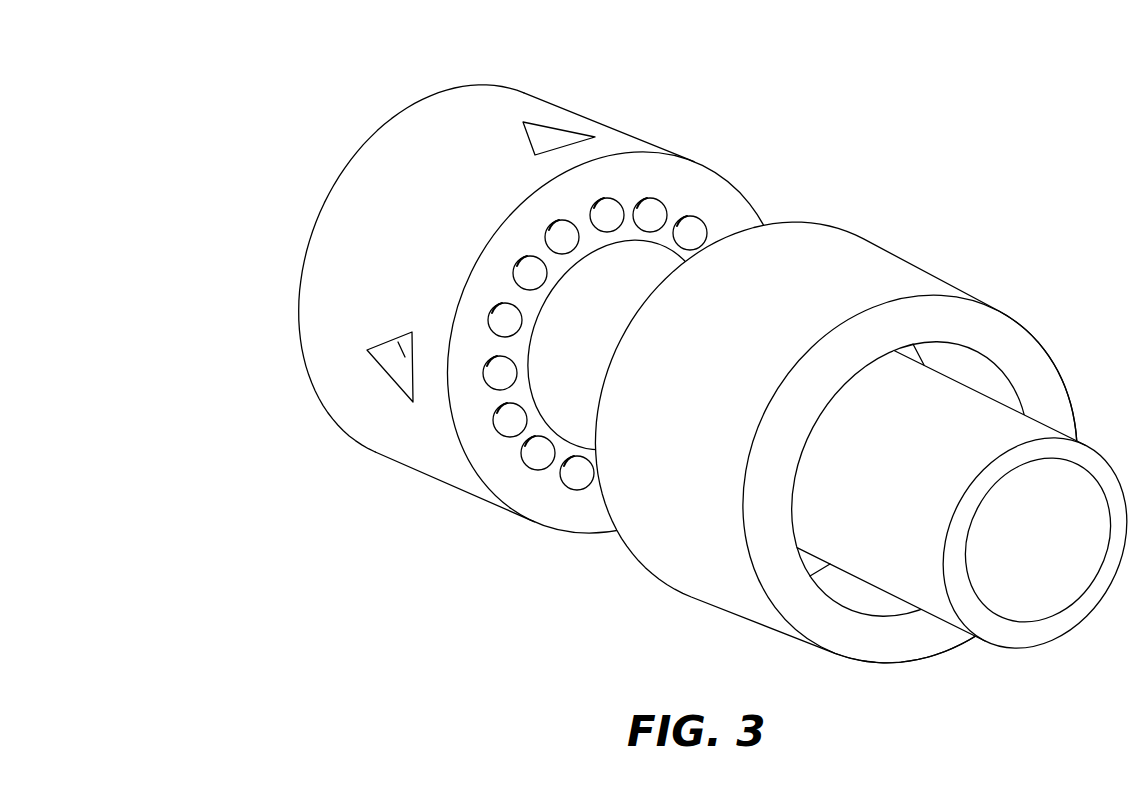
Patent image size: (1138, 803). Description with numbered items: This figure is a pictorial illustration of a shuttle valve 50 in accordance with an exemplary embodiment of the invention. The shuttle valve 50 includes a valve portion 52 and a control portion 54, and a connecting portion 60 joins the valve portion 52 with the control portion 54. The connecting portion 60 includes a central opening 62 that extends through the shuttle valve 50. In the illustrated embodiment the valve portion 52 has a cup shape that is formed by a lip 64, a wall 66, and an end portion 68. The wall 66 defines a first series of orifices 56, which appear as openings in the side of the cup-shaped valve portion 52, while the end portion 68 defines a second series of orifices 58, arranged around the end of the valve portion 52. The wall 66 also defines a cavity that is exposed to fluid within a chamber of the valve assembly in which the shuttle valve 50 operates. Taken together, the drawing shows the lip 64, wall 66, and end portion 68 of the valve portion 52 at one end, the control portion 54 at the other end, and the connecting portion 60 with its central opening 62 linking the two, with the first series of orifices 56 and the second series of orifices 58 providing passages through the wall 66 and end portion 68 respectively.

The shuttle valve 50 is at (663, 381).
The valve portion 52 is at (517, 315).
The control portion 54 is at (1013, 270).
The first series of orifices 56 is at (560, 135).
The second series of orifices 58 is at (657, 218).
The connecting portion 60 is at (967, 524).
The central opening 62 is at (1068, 588).
The lip 64 is at (420, 102).
The wall 66 is at (543, 97).
The end portion 68 is at (690, 180).